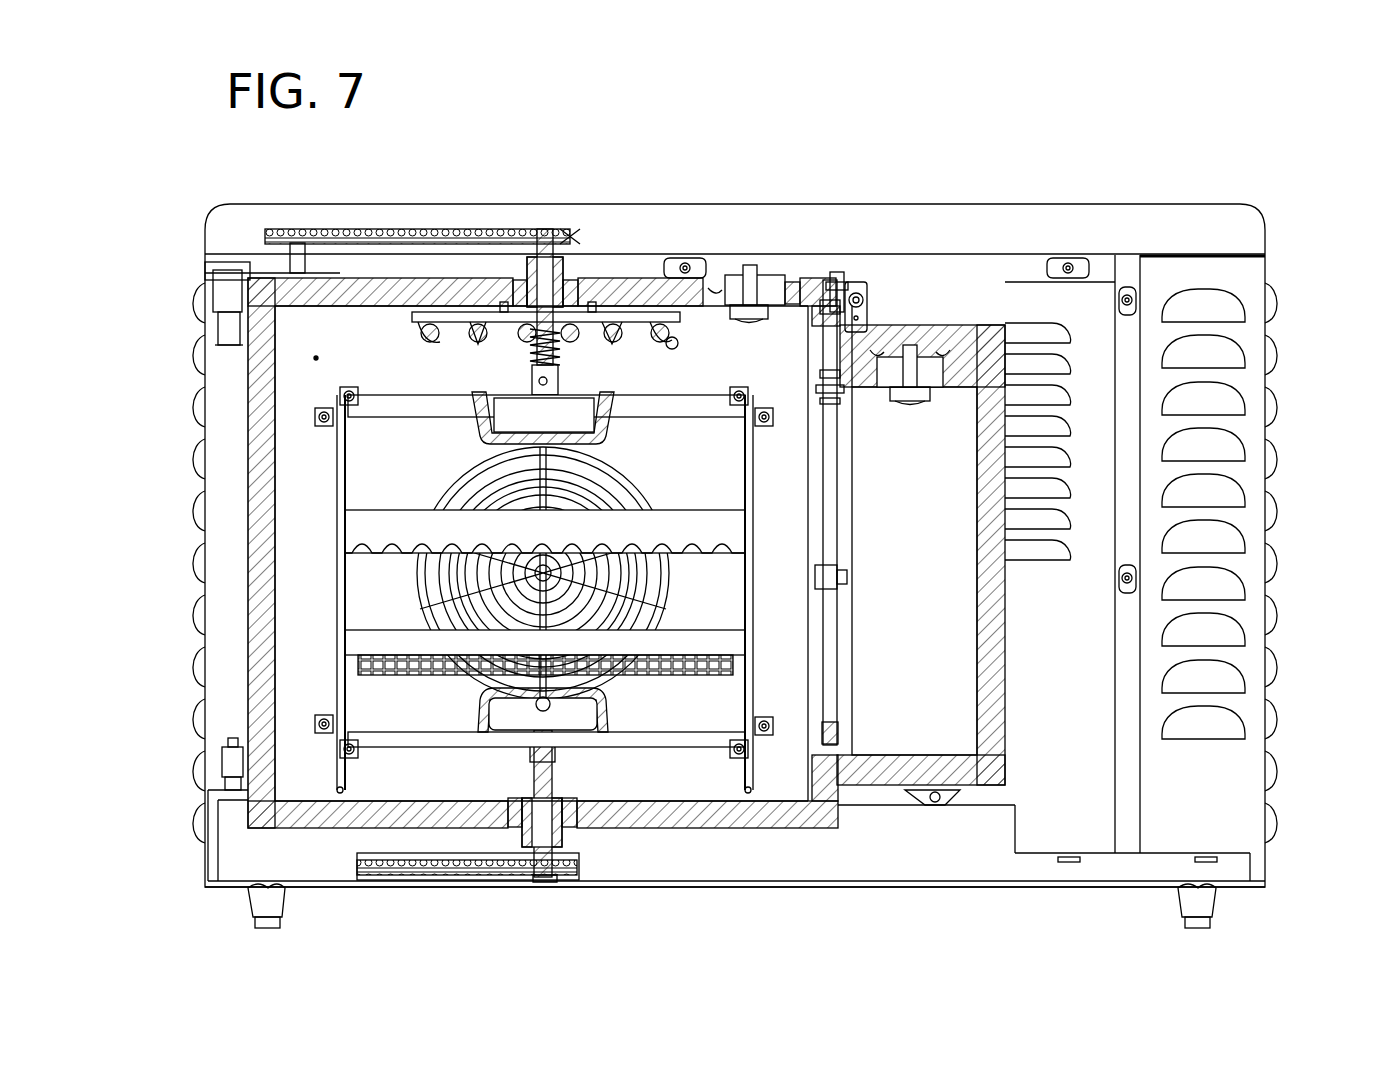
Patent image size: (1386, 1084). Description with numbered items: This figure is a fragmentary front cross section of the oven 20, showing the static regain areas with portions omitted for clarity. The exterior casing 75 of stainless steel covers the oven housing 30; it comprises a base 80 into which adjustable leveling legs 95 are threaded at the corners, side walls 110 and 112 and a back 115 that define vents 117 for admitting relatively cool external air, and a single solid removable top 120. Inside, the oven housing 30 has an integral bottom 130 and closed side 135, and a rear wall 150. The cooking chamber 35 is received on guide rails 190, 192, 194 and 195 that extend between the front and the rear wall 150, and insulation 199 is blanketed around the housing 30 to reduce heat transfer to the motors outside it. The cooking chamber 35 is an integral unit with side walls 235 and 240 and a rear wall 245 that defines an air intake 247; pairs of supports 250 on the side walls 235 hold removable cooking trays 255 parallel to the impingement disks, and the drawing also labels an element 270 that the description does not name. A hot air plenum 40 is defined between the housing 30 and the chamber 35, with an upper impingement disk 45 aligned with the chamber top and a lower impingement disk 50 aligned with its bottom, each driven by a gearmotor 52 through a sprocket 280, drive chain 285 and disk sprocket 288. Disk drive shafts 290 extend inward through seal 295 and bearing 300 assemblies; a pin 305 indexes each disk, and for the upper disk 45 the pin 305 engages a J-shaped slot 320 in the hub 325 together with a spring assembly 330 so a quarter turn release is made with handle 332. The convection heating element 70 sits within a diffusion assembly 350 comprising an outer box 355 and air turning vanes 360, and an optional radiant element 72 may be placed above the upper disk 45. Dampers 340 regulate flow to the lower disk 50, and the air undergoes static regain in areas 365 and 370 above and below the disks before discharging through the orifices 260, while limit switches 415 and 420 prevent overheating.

The oven 20 is at (1282, 205).
The oven housing 30 is at (708, 810).
The cooking chamber 35 is at (543, 585).
The plenum 40 is at (262, 442).
The upper impingement disk 45 is at (719, 395).
The lower impingement disk 50 is at (674, 762).
The gearmotor 52 is at (230, 330).
The convection heating element 70 is at (842, 454).
The radiant heating element 72 is at (676, 349).
The exterior casing 75 is at (877, 203).
The base 80 is at (860, 889).
The leveling legs 95 is at (296, 929).
The side wall 110 is at (216, 856).
The side wall 112 is at (1246, 281).
The back 115 is at (1062, 822).
The vents 117 is at (1040, 400).
The top 120 is at (1000, 206).
The bottom 130 is at (731, 810).
The closed side 135 is at (265, 558).
The rear wall 150 is at (710, 345).
The guide rail 190 is at (326, 760).
The guide rail 192 is at (752, 752).
The guide rail 194 is at (330, 428).
The guide rail 195 is at (756, 406).
The insulation 199 is at (256, 592).
The side wall 235 is at (345, 556).
The side wall 240 is at (755, 572).
The rear wall 245 is at (750, 472).
The air intake 247 is at (640, 472).
The supports 250 is at (738, 560).
The cooking trays 255 is at (662, 508).
The impingement disk orifices 260 is at (506, 412).
The end plate 270 is at (401, 418).
The sprocket 280 is at (291, 222).
The drive chain 285 is at (430, 227).
The disk sprocket 288 is at (580, 226).
The disk drive shaft 290 is at (566, 250).
The seal 295 is at (578, 830).
The bearing 300 is at (525, 268).
The pin 305 is at (532, 380).
The J-shaped slot 320 is at (560, 381).
The hub 325 is at (562, 348).
The spring assembly 330 is at (530, 352).
The handle 332 is at (616, 434).
The damper 340 is at (262, 702).
The diffusion assembly 350 is at (960, 762).
The outer box 355 is at (820, 748).
The air turning vanes 360 is at (1000, 702).
The static regain area 365 is at (310, 359).
The static regain area 370 is at (673, 795).
The limit switch 415 is at (788, 270).
The limit switch 420 is at (917, 345).